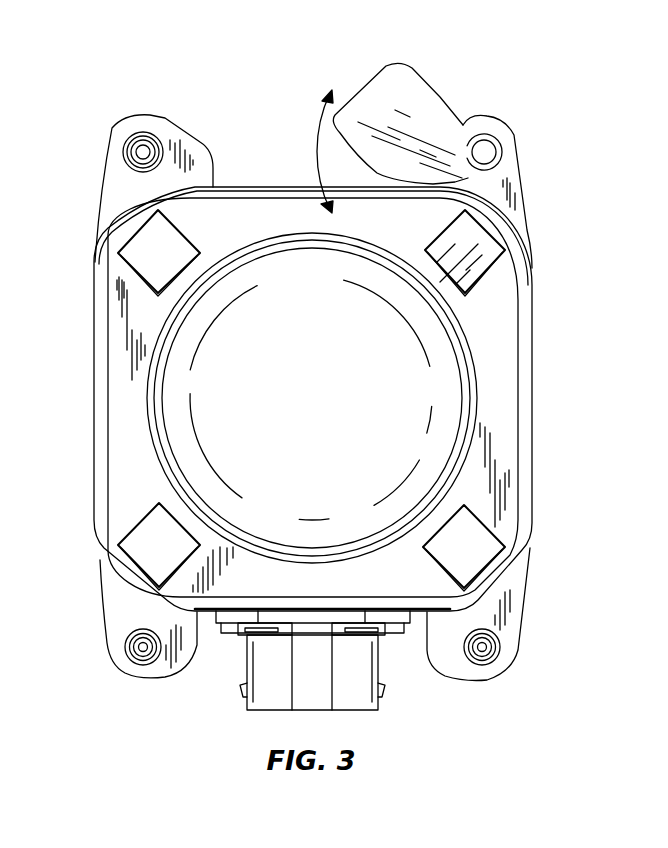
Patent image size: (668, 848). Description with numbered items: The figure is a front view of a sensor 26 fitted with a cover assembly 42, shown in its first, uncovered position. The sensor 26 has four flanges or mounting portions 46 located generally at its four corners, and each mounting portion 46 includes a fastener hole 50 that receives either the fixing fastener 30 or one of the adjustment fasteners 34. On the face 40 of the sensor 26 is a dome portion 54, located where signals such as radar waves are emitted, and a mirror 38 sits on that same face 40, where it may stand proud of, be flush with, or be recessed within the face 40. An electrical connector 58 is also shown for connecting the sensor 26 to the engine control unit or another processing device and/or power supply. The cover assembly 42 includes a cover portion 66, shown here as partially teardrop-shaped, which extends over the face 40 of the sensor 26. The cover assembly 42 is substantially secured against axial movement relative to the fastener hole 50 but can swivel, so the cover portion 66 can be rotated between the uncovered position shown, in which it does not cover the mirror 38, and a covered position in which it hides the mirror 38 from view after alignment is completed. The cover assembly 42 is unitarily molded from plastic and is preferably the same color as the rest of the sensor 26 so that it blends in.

The sensor 26 is at (533, 480).
The fixing fastener 30 is at (143, 650).
The adjustment fastener 34 is at (146, 150).
The mirror 38 is at (473, 253).
The face 40 is at (393, 586).
The cover assembly 42 is at (438, 63).
The mounting portion 46 is at (99, 191).
The fastener hole 50 is at (125, 142).
The dome portion 54 is at (443, 383).
The electrical connector 58 is at (378, 660).
The cover portion 66 is at (433, 120).